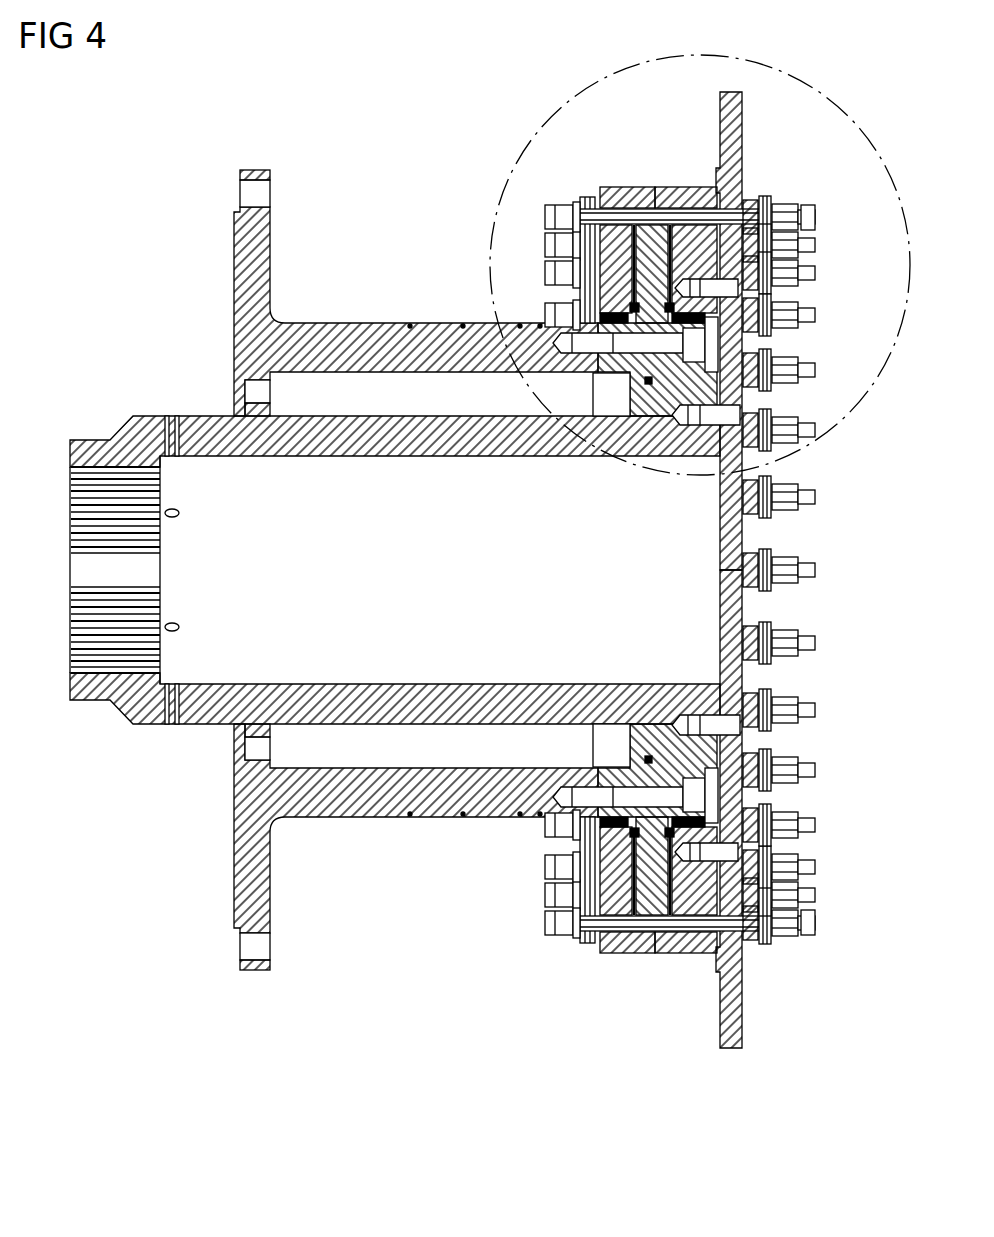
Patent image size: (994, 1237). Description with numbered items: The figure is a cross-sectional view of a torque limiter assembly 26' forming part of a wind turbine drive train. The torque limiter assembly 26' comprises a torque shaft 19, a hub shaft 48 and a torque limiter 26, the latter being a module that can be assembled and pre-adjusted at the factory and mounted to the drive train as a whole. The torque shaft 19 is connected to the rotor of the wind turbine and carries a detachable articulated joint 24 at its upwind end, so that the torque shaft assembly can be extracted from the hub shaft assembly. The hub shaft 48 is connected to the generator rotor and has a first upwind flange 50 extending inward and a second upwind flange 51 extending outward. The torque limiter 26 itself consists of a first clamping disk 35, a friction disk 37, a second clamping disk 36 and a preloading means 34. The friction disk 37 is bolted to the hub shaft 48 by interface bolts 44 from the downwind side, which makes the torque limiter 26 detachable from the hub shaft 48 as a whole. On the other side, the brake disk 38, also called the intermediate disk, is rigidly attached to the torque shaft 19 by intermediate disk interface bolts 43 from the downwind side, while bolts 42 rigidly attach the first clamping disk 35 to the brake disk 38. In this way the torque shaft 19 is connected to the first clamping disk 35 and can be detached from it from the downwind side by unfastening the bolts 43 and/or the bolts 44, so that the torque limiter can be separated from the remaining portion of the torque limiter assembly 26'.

The torque shaft 19 is at (214, 423).
The detachable articulated joint 24 is at (80, 630).
The torque limiter 26 is at (715, 265).
The torque limiter assembly 26' is at (340, 552).
The preloading means 34 is at (830, 218).
The first clamping disk 35 is at (686, 193).
The second clamping disk 36 is at (603, 187).
The friction disk 37 is at (638, 230).
The brake disk 38 is at (733, 118).
The bolts 42 is at (745, 290).
The intermediate disk interface bolts 43 is at (736, 409).
The interface bolts 44 is at (700, 338).
The hub shaft 48 is at (352, 333).
The first upwind flange 50 is at (262, 388).
The second upwind flange 51 is at (262, 198).